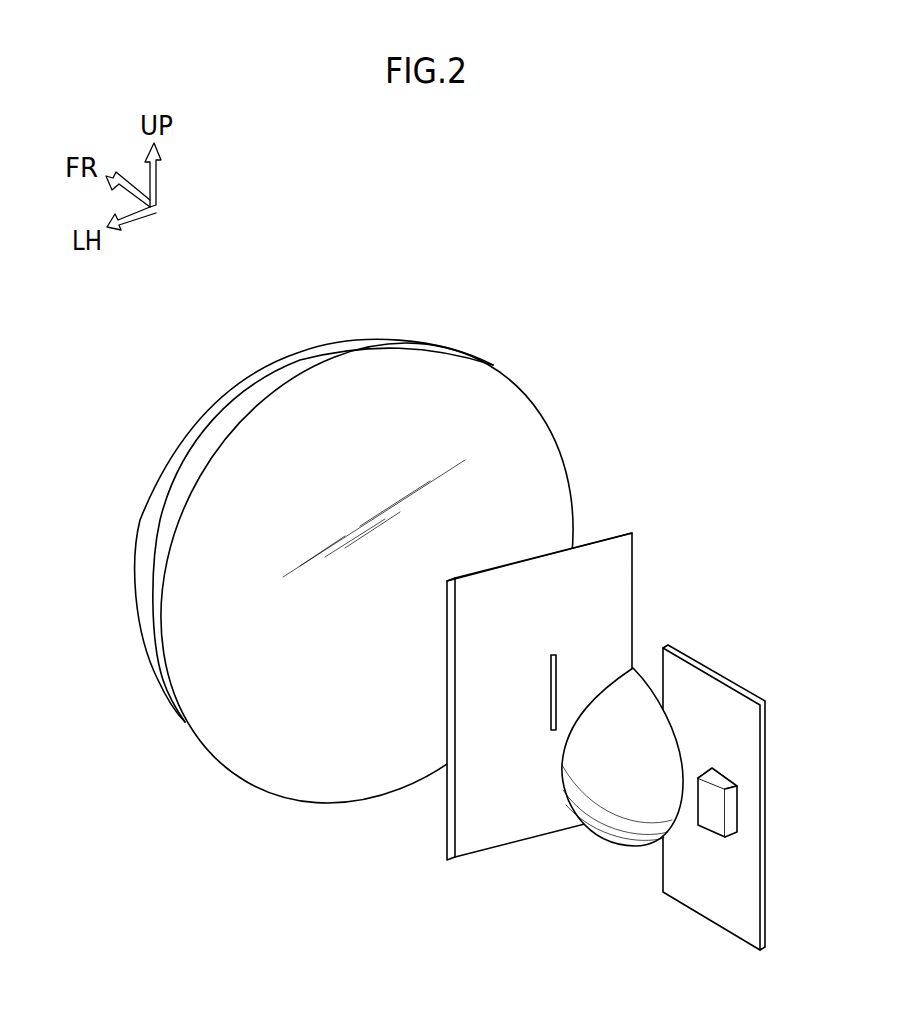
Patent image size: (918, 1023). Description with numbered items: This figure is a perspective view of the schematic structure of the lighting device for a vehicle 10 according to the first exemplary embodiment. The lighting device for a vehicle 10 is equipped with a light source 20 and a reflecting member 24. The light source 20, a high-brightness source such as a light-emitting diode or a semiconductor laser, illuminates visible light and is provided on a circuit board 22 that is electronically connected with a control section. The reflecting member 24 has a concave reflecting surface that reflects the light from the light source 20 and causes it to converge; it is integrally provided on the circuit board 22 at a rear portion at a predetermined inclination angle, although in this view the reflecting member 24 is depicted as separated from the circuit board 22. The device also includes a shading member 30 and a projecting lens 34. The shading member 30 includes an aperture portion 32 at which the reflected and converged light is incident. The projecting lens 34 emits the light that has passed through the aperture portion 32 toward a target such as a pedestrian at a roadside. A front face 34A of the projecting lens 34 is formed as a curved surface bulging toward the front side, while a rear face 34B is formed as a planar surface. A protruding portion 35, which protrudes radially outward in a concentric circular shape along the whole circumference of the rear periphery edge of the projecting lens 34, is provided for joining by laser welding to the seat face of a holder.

The lighting device for a vehicle 10 is at (584, 327).
The light source 20 is at (711, 815).
The circuit board 22 is at (720, 685).
The reflecting member 24 is at (630, 800).
The shading member 30 is at (628, 531).
The aperture portion 32 is at (556, 662).
The projecting lens 34 is at (296, 346).
The front face 34A is at (173, 452).
The rear face 34B is at (305, 708).
The protruding portion 35 is at (162, 625).